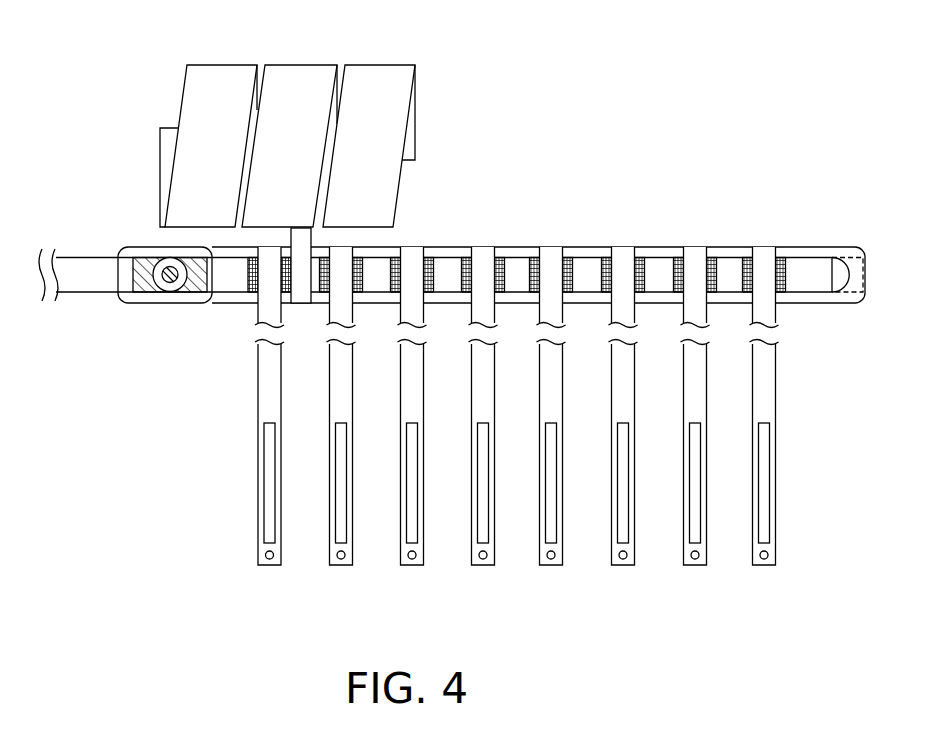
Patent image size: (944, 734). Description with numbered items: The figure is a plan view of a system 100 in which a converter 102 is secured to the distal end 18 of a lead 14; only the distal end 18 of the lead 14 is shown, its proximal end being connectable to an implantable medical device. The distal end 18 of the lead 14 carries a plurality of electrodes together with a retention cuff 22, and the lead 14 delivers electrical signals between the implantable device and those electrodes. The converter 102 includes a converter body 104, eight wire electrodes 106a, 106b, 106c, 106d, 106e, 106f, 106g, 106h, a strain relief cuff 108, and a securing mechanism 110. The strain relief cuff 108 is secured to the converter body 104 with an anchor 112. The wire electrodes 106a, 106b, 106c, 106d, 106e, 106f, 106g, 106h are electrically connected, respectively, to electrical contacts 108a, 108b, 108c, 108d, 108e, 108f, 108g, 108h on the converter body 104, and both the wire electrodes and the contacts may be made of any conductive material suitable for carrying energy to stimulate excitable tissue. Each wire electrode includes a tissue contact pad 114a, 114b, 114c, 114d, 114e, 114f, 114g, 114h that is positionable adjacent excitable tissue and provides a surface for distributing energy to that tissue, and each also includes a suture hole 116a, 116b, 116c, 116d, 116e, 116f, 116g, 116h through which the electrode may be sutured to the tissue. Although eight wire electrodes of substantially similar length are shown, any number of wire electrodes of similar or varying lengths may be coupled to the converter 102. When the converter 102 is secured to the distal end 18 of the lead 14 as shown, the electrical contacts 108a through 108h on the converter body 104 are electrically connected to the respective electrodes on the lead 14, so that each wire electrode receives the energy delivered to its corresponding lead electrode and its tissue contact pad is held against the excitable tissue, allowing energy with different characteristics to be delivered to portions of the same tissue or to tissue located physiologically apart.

The system 100 is at (523, 150).
The lead 14 is at (70, 294).
The distal end 18 is at (828, 250).
The retention cuff 22 is at (145, 293).
The converter 102 is at (220, 320).
The converter body 104 is at (582, 247).
The strain relief cuff 108 is at (367, 72).
The securing mechanism 110 is at (141, 246).
The anchor 112 is at (307, 238).
The wire electrode 106a is at (272, 572).
The wire electrode 106b is at (272, 572).
The wire electrode 106c is at (413, 429).
The wire electrode 106d is at (484, 429).
The wire electrode 106e is at (552, 429).
The wire electrode 106f is at (625, 429).
The wire electrode 106g is at (696, 429).
The wire electrode 106h is at (765, 429).
The electrical contact 108a is at (288, 292).
The electrical contact 108b is at (357, 322).
The electrical contact 108c is at (428, 322).
The electrical contact 108d is at (499, 322).
The electrical contact 108e is at (567, 322).
The electrical contact 108f is at (639, 322).
The electrical contact 108g is at (711, 322).
The electrical contact 108h is at (780, 322).
The tissue contact pad 114a is at (272, 497).
The tissue contact pad 114b is at (364, 483).
The tissue contact pad 114c is at (435, 483).
The tissue contact pad 114d is at (506, 483).
The tissue contact pad 114e is at (574, 483).
The tissue contact pad 114f is at (647, 483).
The tissue contact pad 114g is at (718, 483).
The tissue contact pad 114h is at (787, 483).
The suture hole 116a is at (274, 555).
The suture hole 116b is at (366, 535).
The suture hole 116c is at (437, 535).
The suture hole 116d is at (508, 535).
The suture hole 116e is at (576, 535).
The suture hole 116f is at (648, 535).
The suture hole 116g is at (720, 535).
The suture hole 116h is at (789, 535).